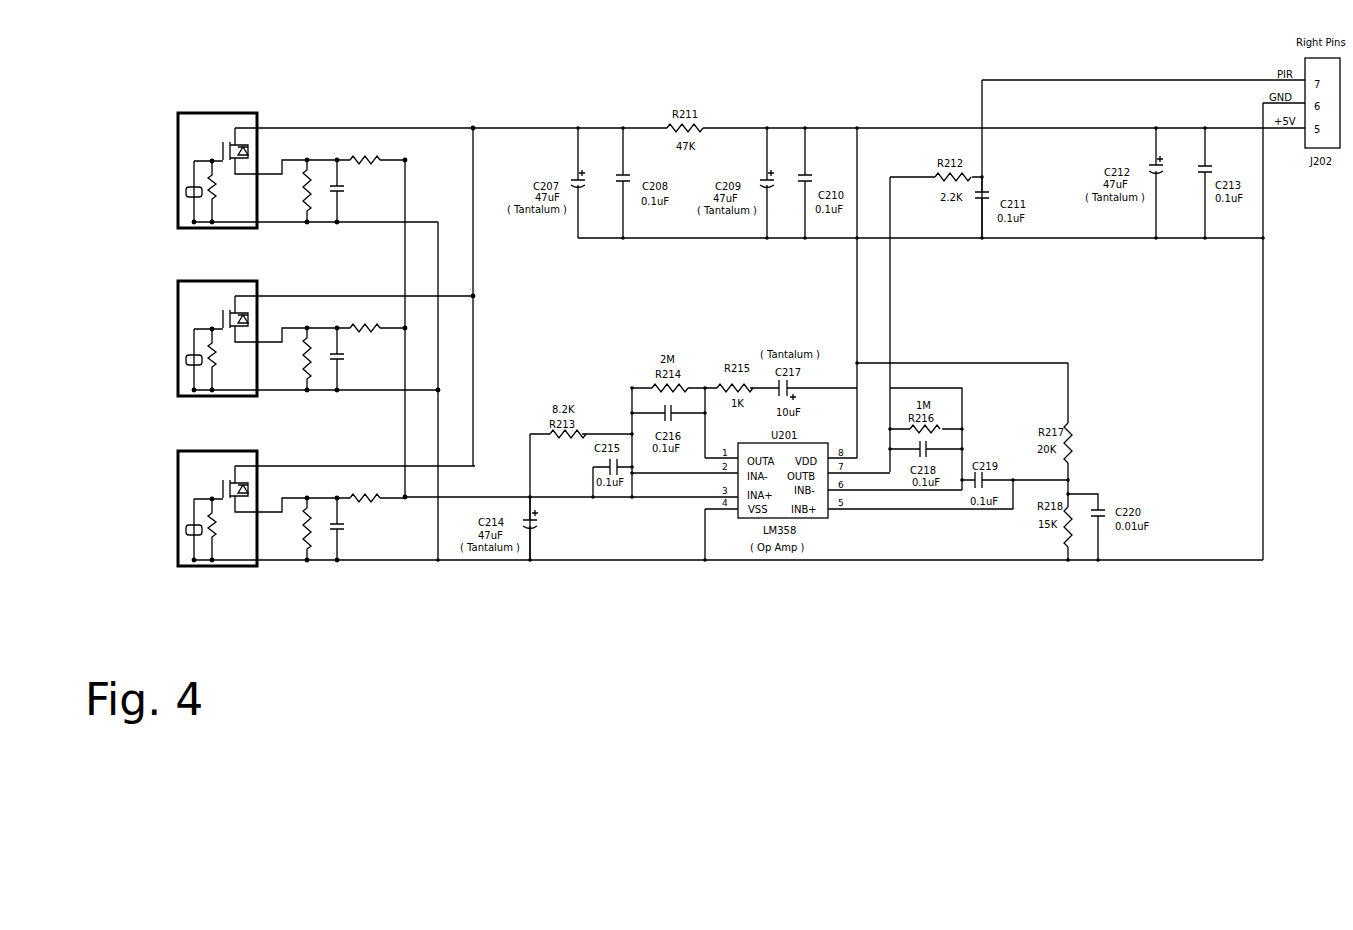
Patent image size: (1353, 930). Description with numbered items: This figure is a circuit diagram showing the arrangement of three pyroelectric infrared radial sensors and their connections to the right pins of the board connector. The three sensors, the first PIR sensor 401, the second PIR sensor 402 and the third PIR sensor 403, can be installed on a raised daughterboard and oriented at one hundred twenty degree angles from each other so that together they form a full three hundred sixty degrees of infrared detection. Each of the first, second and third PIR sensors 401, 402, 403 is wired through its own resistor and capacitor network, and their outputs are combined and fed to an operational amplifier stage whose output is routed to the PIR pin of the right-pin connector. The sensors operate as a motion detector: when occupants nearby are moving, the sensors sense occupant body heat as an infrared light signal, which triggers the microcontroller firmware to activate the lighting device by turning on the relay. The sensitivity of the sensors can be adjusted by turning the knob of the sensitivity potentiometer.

The PIR1 pyroelectric infrared radial sensor 401 is at (182, 236).
The PIR2 pyroelectric infrared radial sensor 402 is at (182, 404).
The PIR3 pyroelectric infrared radial sensor 403 is at (182, 574).